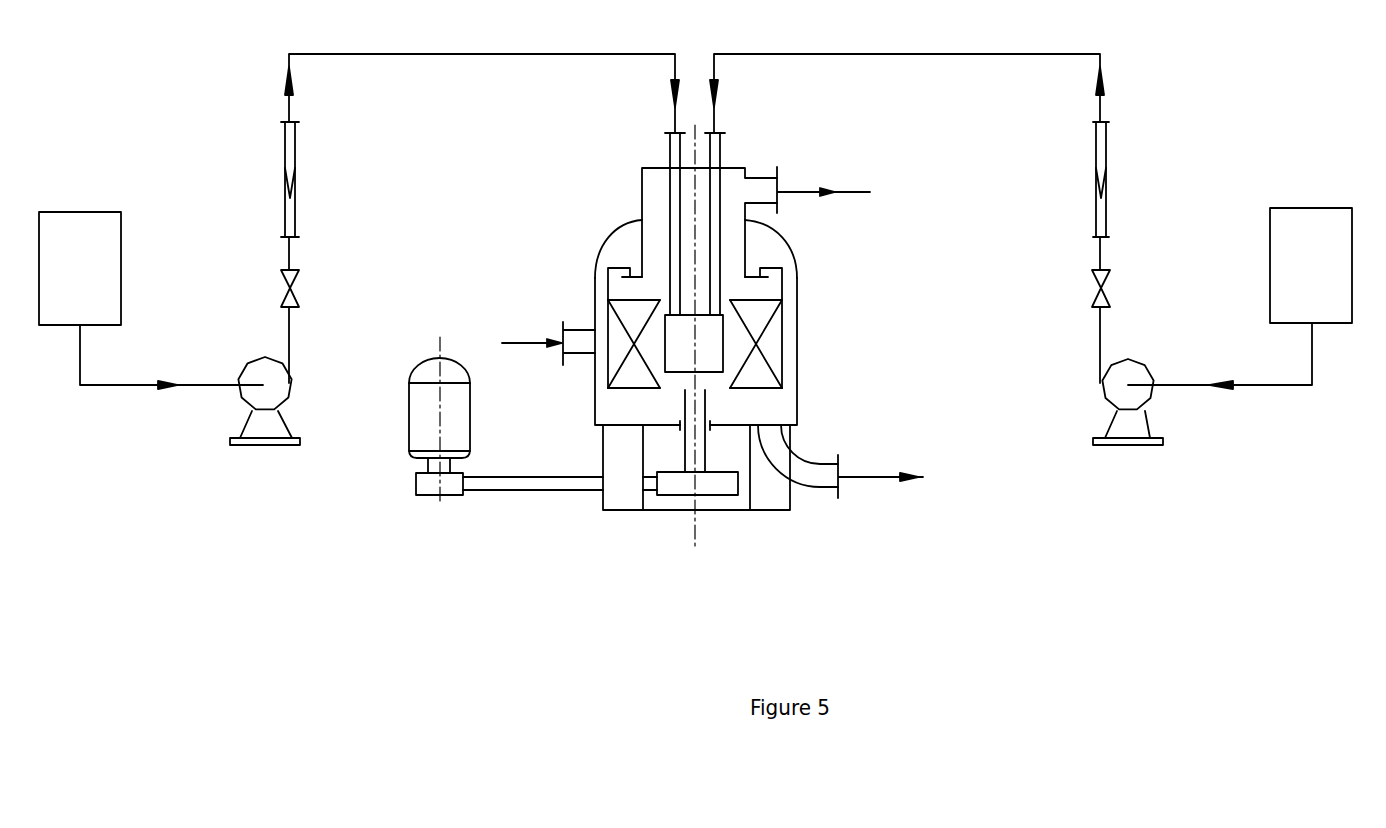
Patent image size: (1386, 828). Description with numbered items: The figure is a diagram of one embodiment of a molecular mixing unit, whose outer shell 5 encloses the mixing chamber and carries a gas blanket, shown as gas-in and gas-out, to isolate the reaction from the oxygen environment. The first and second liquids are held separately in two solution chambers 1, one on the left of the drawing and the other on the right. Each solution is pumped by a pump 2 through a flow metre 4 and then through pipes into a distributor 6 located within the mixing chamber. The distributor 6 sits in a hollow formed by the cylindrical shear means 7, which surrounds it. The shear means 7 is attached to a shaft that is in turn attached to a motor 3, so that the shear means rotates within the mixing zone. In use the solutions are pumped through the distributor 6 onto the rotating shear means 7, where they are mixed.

The solution chamber 1 is at (121, 260).
The pump 2 is at (268, 432).
The motor 3 is at (418, 412).
The flow metre 4 is at (292, 202).
The outer shell 5 is at (593, 283).
The distributor 6 is at (718, 328).
The shear means 7 is at (760, 368).